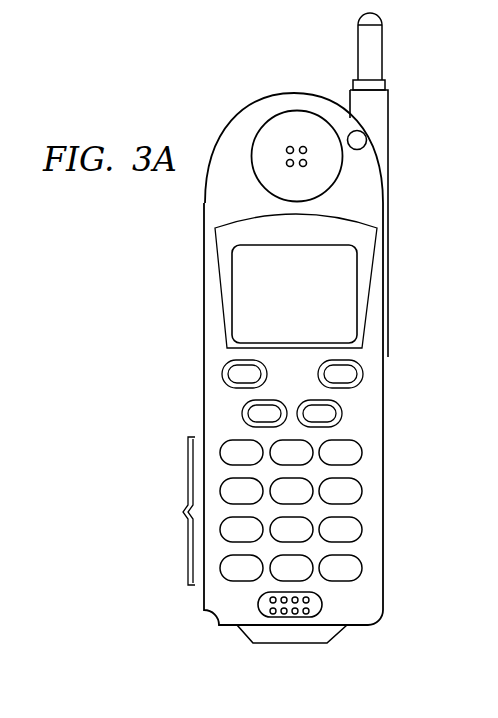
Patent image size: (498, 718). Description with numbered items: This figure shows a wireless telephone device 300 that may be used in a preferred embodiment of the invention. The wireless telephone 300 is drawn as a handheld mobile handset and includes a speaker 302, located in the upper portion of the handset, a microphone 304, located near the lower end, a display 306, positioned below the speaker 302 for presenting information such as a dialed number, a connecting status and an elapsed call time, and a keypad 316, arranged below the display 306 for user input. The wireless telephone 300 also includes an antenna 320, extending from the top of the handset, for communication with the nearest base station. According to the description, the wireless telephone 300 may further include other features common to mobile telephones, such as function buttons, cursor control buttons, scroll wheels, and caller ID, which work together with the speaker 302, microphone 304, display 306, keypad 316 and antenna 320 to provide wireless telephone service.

The wireless telephone device 300 is at (204, 378).
The speaker 302 is at (253, 156).
The microphone 304 is at (258, 604).
The display 306 is at (233, 297).
The keypad 316 is at (183, 512).
The antenna 320 is at (357, 52).